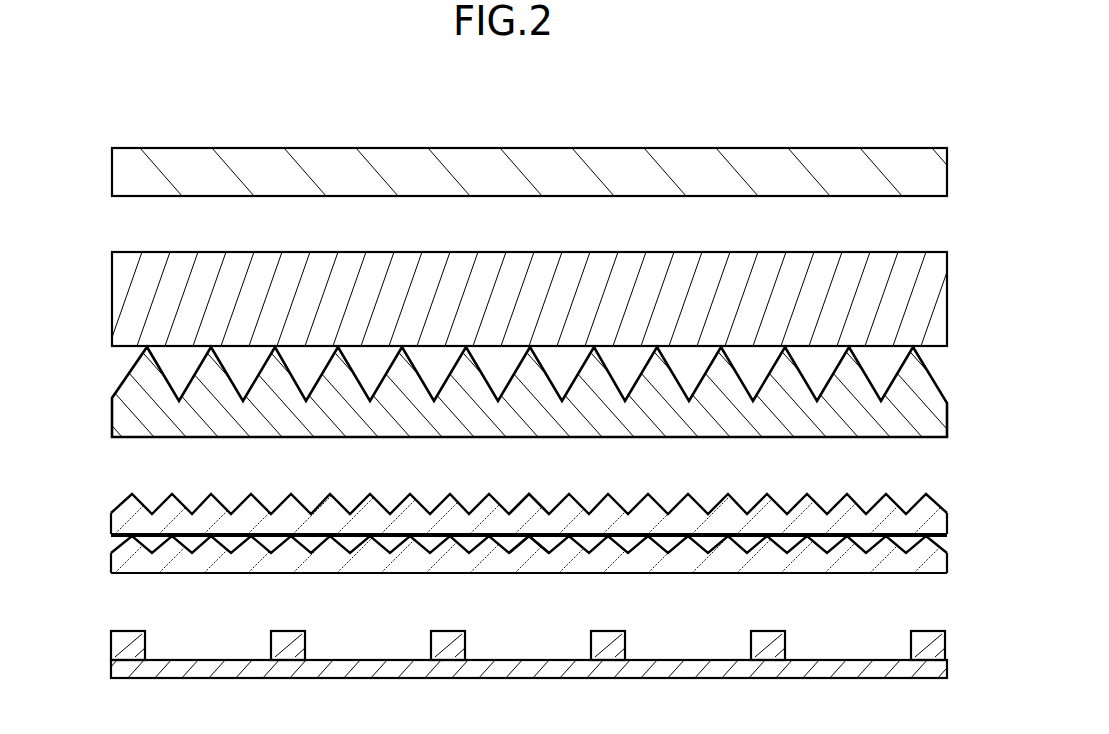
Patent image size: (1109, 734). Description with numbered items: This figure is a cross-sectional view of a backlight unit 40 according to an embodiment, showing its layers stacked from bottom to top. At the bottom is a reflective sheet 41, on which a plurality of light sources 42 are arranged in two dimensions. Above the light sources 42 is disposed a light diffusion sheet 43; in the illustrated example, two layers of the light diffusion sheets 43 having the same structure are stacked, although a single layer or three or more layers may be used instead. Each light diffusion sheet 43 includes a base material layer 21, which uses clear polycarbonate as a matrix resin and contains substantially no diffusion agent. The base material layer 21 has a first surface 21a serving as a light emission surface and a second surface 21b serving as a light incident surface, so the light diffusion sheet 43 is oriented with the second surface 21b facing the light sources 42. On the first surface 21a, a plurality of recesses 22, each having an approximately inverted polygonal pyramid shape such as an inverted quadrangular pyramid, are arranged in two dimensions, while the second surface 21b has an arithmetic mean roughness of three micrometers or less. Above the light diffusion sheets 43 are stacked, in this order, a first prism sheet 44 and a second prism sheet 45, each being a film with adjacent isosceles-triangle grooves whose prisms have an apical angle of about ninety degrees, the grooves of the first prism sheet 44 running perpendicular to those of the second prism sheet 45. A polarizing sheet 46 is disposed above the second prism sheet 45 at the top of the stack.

The backlight unit 40 is at (852, 109).
The polarizing sheet 46 is at (112, 170).
The second prism sheet 45 is at (112, 295).
The first prism sheet 44 is at (112, 413).
The light diffusion sheet 43 is at (94, 567).
The base material layer 21 is at (168, 510).
The recesses 22 is at (353, 500).
The first surface 21a is at (558, 498).
The second surface 21b is at (668, 543).
The light sources 42 is at (272, 648).
The reflective sheet 41 is at (112, 667).